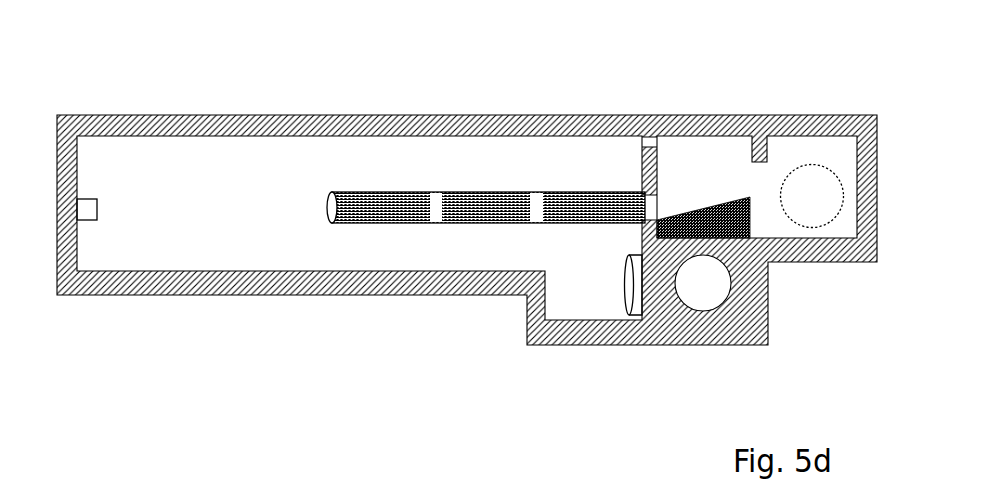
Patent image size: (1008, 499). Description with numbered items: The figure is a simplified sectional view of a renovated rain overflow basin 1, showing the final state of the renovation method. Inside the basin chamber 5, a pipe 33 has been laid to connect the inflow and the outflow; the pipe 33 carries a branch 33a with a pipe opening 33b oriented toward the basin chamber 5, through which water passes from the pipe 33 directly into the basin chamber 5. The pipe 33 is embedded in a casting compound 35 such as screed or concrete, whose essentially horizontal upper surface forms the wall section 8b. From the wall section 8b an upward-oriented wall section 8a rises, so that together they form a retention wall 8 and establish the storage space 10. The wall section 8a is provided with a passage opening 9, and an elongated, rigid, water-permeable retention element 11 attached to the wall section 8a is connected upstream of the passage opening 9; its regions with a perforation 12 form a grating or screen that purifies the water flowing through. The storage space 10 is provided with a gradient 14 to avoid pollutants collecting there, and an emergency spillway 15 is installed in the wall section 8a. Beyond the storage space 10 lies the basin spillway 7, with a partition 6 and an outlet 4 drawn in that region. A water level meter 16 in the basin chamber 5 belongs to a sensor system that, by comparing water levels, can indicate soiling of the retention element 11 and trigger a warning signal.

The rain overflow basin 1 is at (451, 26).
The opening 4 is at (822, 225).
The basin chamber 5 is at (285, 240).
The partition wall 6 is at (758, 163).
The basin spillway 7 is at (827, 143).
The retention wall 8 is at (627, 231).
The wall section 8a is at (642, 167).
The wall section 8b is at (695, 238).
The passage opening 9 is at (647, 203).
The storage space 10 is at (702, 152).
The retention element 11 is at (438, 190).
The perforation 12 is at (360, 198).
The gradient 14 is at (725, 200).
The emergency spillway 15 is at (650, 141).
The water level meter 16 is at (84, 220).
The pipe 33 is at (730, 282).
The branch 33a is at (635, 305).
The pipe opening 33b is at (624, 285).
The casting compound 35 is at (672, 310).